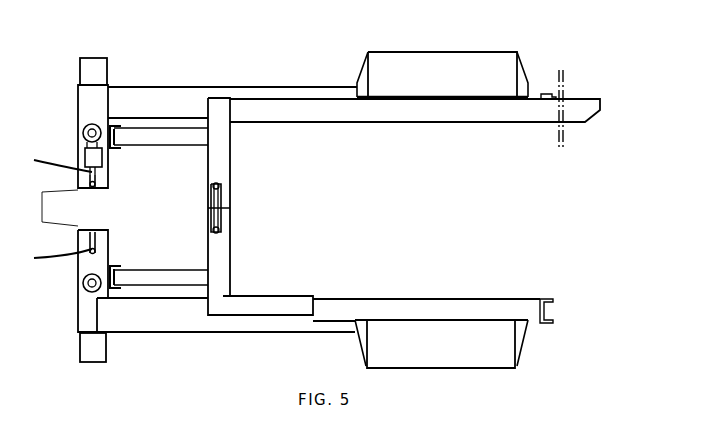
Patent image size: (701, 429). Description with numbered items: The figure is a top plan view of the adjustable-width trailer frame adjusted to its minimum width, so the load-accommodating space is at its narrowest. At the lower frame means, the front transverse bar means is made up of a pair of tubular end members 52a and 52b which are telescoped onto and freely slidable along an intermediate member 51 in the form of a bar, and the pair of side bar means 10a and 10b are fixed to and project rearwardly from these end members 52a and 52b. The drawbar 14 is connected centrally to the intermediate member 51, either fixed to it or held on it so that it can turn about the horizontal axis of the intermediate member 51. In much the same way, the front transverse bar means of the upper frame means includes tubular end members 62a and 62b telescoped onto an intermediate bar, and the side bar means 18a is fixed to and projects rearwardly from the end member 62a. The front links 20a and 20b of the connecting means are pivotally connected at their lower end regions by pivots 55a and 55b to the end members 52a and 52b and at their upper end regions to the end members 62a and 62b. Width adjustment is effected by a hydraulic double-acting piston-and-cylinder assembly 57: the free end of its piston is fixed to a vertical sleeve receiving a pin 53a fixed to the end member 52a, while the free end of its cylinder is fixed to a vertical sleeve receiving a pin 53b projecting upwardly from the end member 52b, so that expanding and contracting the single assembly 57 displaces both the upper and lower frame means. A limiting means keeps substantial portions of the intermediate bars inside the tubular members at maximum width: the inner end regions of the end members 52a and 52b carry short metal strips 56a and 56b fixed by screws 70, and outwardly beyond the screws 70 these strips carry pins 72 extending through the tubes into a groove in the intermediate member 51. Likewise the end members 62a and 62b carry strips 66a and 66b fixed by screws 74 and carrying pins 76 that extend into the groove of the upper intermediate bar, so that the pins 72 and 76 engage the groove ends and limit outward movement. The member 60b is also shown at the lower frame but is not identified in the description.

The side bar means 10a is at (167, 87).
The side bar means 10b is at (160, 333).
The drawbar 14 is at (72, 191).
The side bar means 18a is at (345, 123).
The front link 20a is at (176, 147).
The front link 20b is at (174, 270).
The intermediate member 51 is at (80, 71).
The tubular end member 52a is at (80, 98).
The tubular end member 52b is at (80, 309).
The pin 53a is at (83, 135).
The pin 53b is at (83, 285).
The pivot 55a is at (113, 150).
The pivot 55b is at (113, 265).
The metal strip 56a is at (97, 183).
The metal strip 56b is at (88, 246).
The double-acting piston-and-cylinder assembly 57 is at (85, 159).
The slide block 60b is at (256, 296).
The tubular end member 62a is at (232, 144).
The tubular end member 62b is at (232, 258).
The strip 66a is at (232, 192).
The strip 66b is at (232, 218).
The screw 70 is at (94, 230).
The pin 72 is at (62, 210).
The screw 74 is at (214, 208).
The pin 76 is at (213, 185).